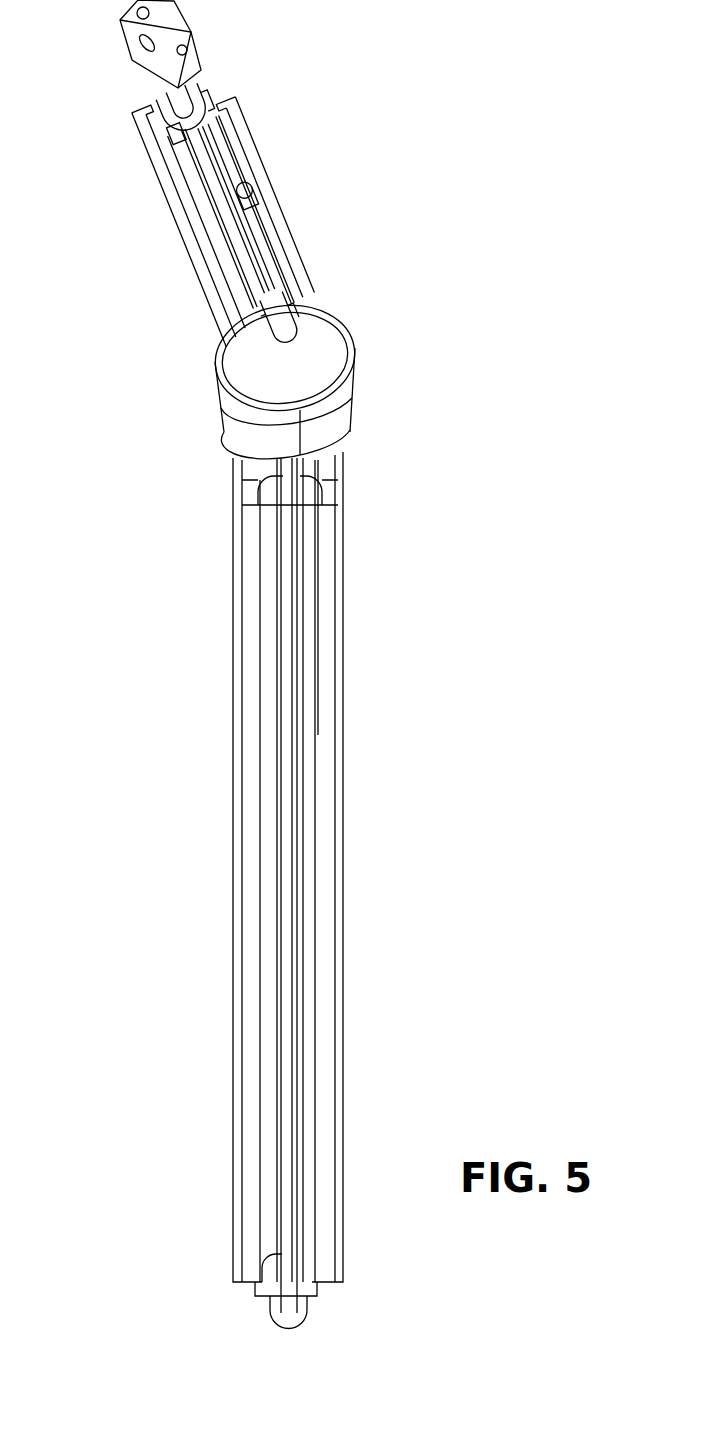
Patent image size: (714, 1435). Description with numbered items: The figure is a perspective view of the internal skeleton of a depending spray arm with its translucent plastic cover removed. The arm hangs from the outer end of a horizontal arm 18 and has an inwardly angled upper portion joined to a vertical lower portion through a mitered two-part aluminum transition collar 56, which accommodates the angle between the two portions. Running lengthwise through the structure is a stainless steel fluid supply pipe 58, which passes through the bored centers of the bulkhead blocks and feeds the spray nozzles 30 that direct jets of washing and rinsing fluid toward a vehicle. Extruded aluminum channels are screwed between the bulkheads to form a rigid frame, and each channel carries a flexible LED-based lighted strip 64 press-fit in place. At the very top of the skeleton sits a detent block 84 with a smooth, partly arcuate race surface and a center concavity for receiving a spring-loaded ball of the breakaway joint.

The left horizontal arm 18 is at (288, 890).
The spray nozzles 30 is at (275, 740).
The transition collar 56 is at (355, 350).
The fluid supply pipe 58 is at (288, 1152).
The LED-based lighted strip 64 is at (345, 960).
The detent block 84 is at (128, 58).